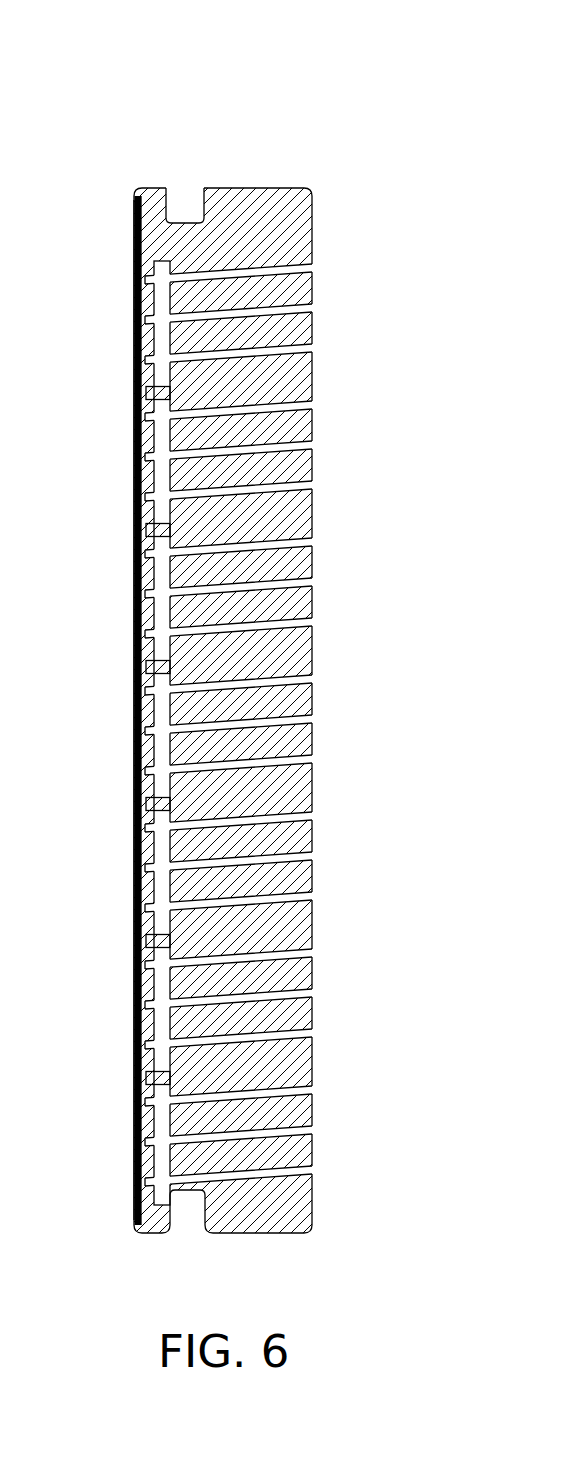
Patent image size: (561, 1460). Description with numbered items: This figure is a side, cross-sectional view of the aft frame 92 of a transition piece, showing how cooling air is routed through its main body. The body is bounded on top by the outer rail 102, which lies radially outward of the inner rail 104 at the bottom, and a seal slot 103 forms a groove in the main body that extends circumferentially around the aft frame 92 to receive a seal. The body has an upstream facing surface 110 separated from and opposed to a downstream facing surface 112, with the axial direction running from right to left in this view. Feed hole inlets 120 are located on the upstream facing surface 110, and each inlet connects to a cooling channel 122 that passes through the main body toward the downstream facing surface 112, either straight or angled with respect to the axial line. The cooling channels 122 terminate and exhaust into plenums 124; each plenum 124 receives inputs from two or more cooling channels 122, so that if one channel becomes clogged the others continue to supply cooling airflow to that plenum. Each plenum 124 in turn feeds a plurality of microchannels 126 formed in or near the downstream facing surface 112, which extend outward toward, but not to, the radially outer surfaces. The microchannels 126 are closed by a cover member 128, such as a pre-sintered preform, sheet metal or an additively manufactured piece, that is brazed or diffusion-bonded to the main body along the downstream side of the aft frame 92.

The aft frame 92 is at (186, 72).
The outer rail 102 is at (290, 188).
The seal slot 103 is at (182, 198).
The inner rail 104 is at (290, 1237).
The upstream facing surface 110 is at (312, 643).
The downstream facing surface 112 is at (119, 692).
The feed hole inlets 120 is at (312, 265).
The cooling channels 122 is at (267, 418).
The plenums 124 is at (155, 486).
The microchannels 126 is at (147, 838).
The cover member 128 is at (133, 1017).